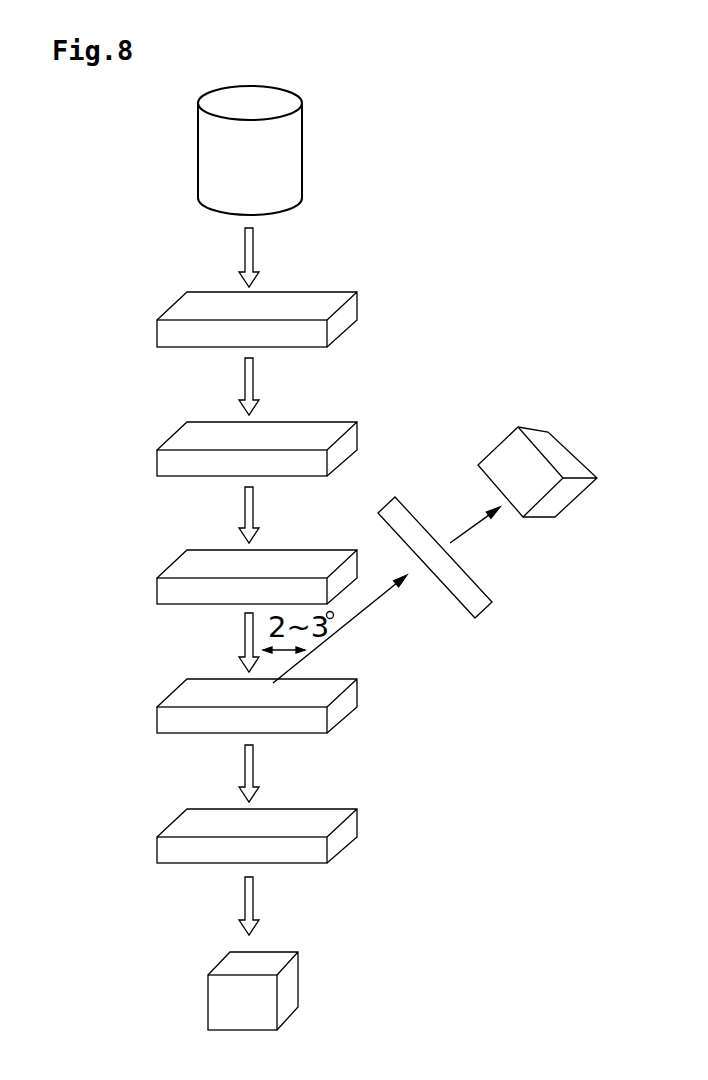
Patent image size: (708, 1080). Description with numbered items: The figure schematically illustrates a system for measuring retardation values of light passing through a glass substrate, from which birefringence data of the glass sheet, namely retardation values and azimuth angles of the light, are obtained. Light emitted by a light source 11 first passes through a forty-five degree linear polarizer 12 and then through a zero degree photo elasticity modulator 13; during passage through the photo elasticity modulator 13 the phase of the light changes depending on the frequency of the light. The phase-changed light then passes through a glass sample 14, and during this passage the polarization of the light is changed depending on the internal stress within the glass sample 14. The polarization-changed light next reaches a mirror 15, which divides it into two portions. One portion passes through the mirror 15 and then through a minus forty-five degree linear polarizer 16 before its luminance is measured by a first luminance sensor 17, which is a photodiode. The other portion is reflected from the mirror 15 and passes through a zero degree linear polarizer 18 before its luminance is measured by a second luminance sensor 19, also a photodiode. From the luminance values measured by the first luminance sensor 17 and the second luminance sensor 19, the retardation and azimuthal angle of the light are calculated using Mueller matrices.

The light source 11 is at (212, 156).
The 45° linear polarizer 12 is at (166, 331).
The 0° photo elasticity modulator 13 is at (173, 463).
The glass sample 14 is at (166, 588).
The mirror 15 is at (167, 718).
The −45° linear polarizer 16 is at (167, 850).
The first luminance sensor (photodiode) 17 is at (217, 997).
The 0° linear polarizer 18 is at (478, 605).
The second luminance sensor (photodiode) 19 is at (560, 498).